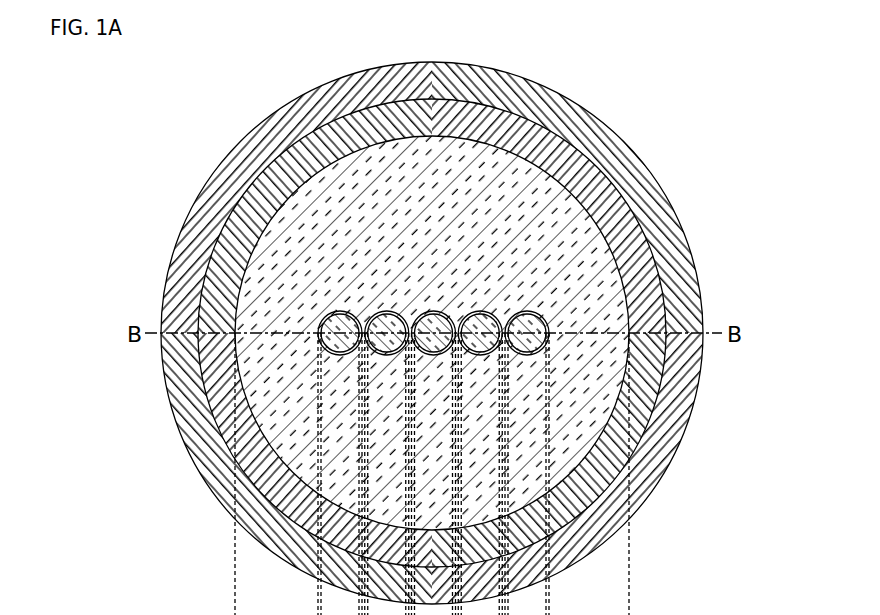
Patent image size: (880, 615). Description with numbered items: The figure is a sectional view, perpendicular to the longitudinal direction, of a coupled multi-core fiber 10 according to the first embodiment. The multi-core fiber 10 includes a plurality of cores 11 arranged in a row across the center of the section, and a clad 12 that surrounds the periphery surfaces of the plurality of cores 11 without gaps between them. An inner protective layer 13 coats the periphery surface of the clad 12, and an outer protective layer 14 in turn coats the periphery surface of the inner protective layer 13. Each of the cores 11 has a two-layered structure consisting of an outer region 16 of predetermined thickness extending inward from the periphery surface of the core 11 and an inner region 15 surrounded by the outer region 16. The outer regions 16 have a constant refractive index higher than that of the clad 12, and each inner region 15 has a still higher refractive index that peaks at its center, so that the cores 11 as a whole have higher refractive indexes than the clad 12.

The multi-core fiber 10 is at (648, 99).
The core 11 is at (551, 326).
The clad 12 is at (612, 316).
The inner protective layer 13 is at (618, 202).
The outer protective layer 14 is at (657, 207).
The inner region 15 is at (548, 340).
The outer region 16 is at (534, 348).